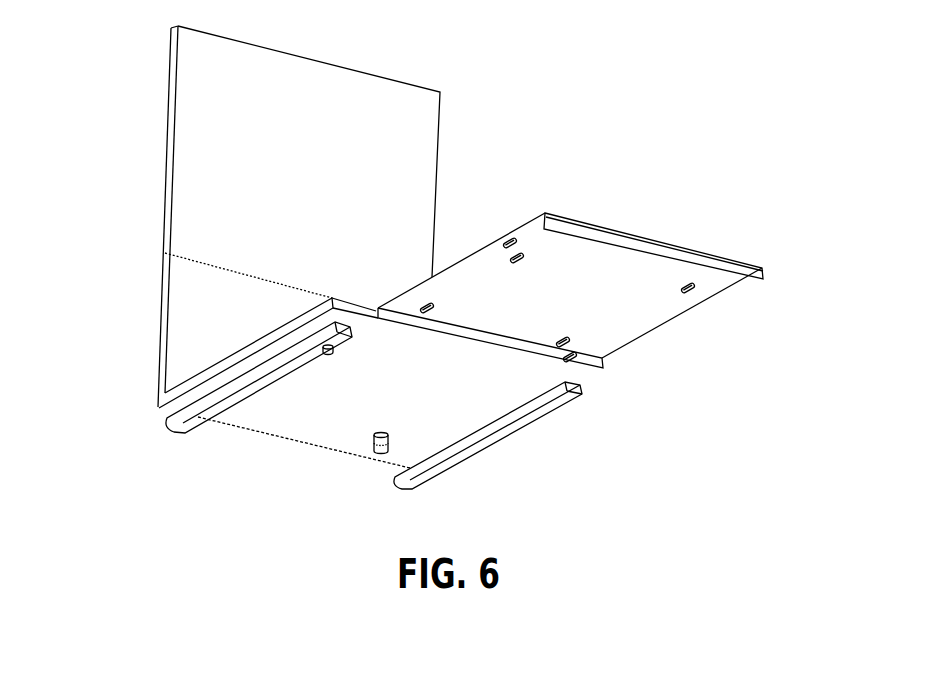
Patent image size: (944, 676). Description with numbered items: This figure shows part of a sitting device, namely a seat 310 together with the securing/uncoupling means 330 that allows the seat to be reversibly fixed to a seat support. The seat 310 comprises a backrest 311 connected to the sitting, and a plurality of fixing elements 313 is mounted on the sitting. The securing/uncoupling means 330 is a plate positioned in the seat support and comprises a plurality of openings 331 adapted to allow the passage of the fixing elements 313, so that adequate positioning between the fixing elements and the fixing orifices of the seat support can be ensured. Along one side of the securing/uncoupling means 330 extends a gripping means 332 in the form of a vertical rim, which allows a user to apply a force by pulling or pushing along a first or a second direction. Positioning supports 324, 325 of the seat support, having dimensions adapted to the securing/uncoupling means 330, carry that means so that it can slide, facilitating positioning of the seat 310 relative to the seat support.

The seat 310 is at (324, 257).
The backrest 311 is at (437, 172).
The fixing elements 313 is at (373, 445).
The positioning support 324 is at (168, 429).
The positioning support 325 is at (470, 447).
The securing/uncoupling means 330 is at (608, 292).
The openings 331 is at (698, 290).
The gripping means 332 is at (768, 257).